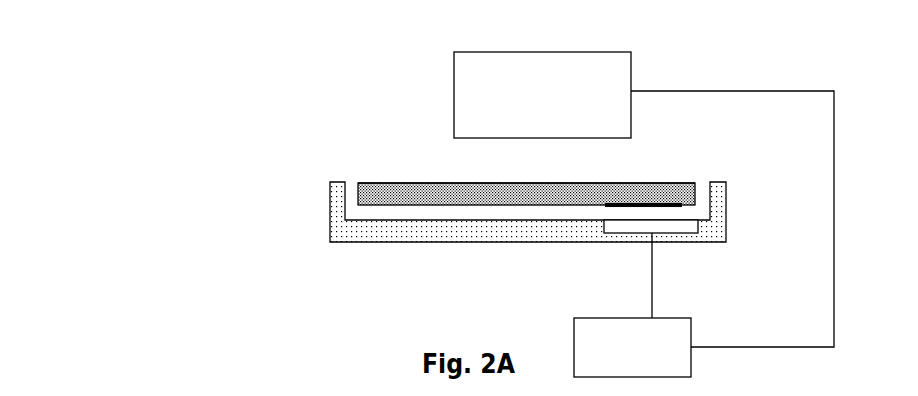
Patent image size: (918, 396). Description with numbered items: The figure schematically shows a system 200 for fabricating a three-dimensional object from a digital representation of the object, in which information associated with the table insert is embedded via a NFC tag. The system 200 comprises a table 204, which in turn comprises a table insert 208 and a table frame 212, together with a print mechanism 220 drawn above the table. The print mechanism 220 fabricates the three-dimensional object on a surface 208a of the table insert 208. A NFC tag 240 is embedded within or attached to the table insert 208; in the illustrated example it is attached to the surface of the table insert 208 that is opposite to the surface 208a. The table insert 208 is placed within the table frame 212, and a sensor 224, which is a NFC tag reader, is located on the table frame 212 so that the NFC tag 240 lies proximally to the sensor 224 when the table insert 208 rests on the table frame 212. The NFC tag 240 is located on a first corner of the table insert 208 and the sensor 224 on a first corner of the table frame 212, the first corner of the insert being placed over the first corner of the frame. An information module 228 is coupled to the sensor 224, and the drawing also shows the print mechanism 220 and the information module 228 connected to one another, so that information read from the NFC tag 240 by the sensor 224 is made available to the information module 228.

The system 200 is at (673, 51).
The table 204 is at (135, 232).
The table insert 208 is at (358, 191).
The surface of the table insert 208a is at (432, 183).
The table frame 212 is at (330, 228).
The print mechanism 220 is at (542, 95).
The sensor 224 is at (676, 233).
The information module 228 is at (632, 347).
The NFC tag 240 is at (667, 204).